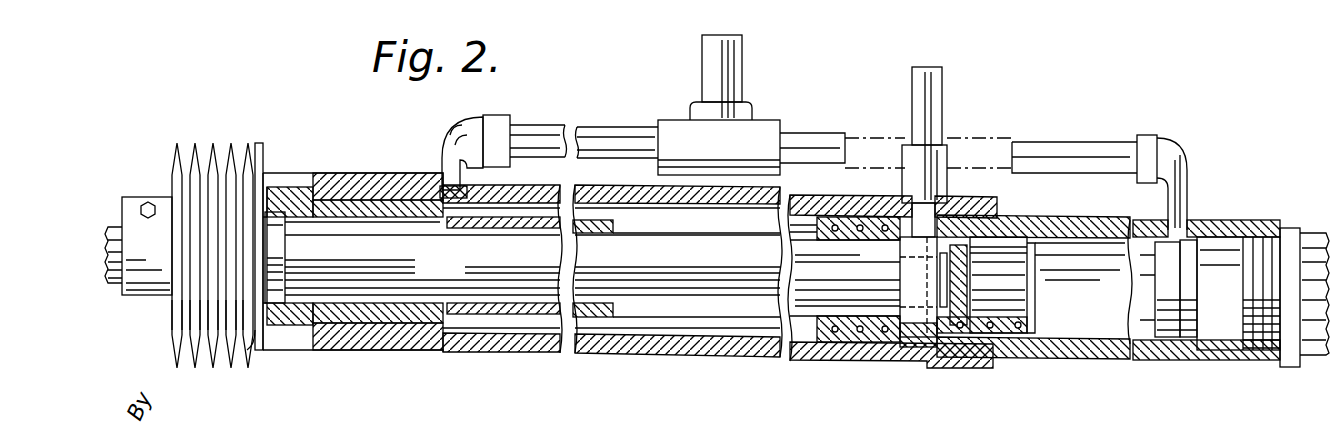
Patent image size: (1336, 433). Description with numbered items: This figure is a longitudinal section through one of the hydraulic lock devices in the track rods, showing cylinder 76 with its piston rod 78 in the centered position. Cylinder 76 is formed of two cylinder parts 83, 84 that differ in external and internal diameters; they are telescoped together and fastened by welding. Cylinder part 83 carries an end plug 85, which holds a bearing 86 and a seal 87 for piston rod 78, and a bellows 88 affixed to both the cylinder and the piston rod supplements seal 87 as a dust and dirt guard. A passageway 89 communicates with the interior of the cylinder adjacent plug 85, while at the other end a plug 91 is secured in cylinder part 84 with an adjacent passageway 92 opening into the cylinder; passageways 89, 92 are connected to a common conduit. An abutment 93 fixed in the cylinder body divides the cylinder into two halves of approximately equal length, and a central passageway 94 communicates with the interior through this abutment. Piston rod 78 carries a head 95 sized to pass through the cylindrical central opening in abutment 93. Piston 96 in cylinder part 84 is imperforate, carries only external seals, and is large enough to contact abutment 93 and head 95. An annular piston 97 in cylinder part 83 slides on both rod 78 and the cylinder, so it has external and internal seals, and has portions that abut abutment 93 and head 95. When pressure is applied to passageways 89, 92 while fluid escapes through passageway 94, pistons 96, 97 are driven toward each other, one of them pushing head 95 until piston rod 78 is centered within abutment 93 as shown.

The cylinder 76 is at (582, 352).
The piston rod 78 is at (460, 273).
The cylinder part 83 is at (799, 362).
The cylinder part 84 is at (1048, 355).
The end plug 85 is at (372, 161).
The bearing 86 is at (363, 222).
The seal 87 is at (279, 233).
The bellows 88 is at (259, 146).
The passageway 89 is at (454, 190).
The plug 91 is at (1230, 252).
The passageway 92 is at (1162, 224).
The abutment 93 is at (933, 350).
The passageway 94 is at (902, 214).
The head 95 is at (908, 268).
The piston 96 is at (1028, 316).
The annular piston 97 is at (846, 241).